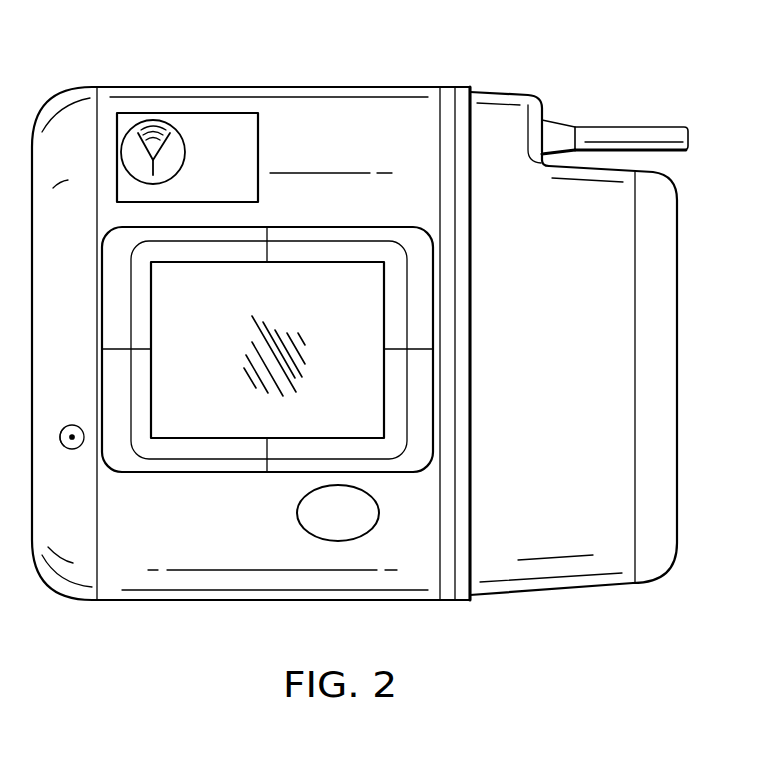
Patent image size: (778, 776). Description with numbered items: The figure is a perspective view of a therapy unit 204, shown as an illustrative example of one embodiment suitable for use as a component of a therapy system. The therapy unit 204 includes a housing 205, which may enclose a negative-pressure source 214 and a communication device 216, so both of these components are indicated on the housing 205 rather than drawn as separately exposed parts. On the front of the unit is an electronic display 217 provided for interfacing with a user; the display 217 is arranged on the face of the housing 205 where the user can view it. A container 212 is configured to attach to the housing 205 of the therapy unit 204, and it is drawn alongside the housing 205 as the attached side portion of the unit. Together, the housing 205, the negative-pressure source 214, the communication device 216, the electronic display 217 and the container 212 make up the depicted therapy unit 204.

The therapy unit 204 is at (108, 75).
The housing 205 is at (260, 602).
The container 212 is at (575, 397).
The negative-pressure source 214 is at (125, 548).
The communication device 216 is at (188, 112).
The electronic display 217 is at (236, 343).